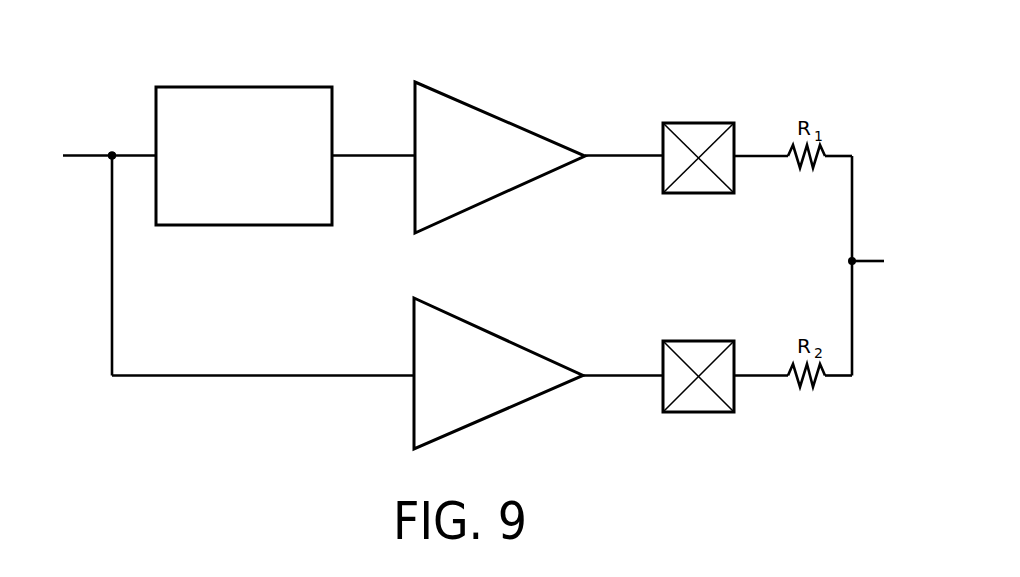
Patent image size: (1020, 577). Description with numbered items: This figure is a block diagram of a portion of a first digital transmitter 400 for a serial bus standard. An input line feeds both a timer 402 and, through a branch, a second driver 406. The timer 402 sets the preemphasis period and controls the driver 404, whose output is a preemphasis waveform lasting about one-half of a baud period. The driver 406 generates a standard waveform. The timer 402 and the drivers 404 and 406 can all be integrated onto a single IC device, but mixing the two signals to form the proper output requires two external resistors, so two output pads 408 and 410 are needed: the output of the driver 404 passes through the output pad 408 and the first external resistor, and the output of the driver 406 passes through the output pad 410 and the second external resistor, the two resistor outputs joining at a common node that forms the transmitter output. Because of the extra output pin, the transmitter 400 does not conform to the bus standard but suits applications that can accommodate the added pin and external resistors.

The transmitter 400 is at (111, 136).
The timer 402 is at (228, 87).
The driver 404 is at (465, 102).
The driver 406 is at (456, 315).
The output pad 408 is at (697, 122).
The output pad 410 is at (697, 339).